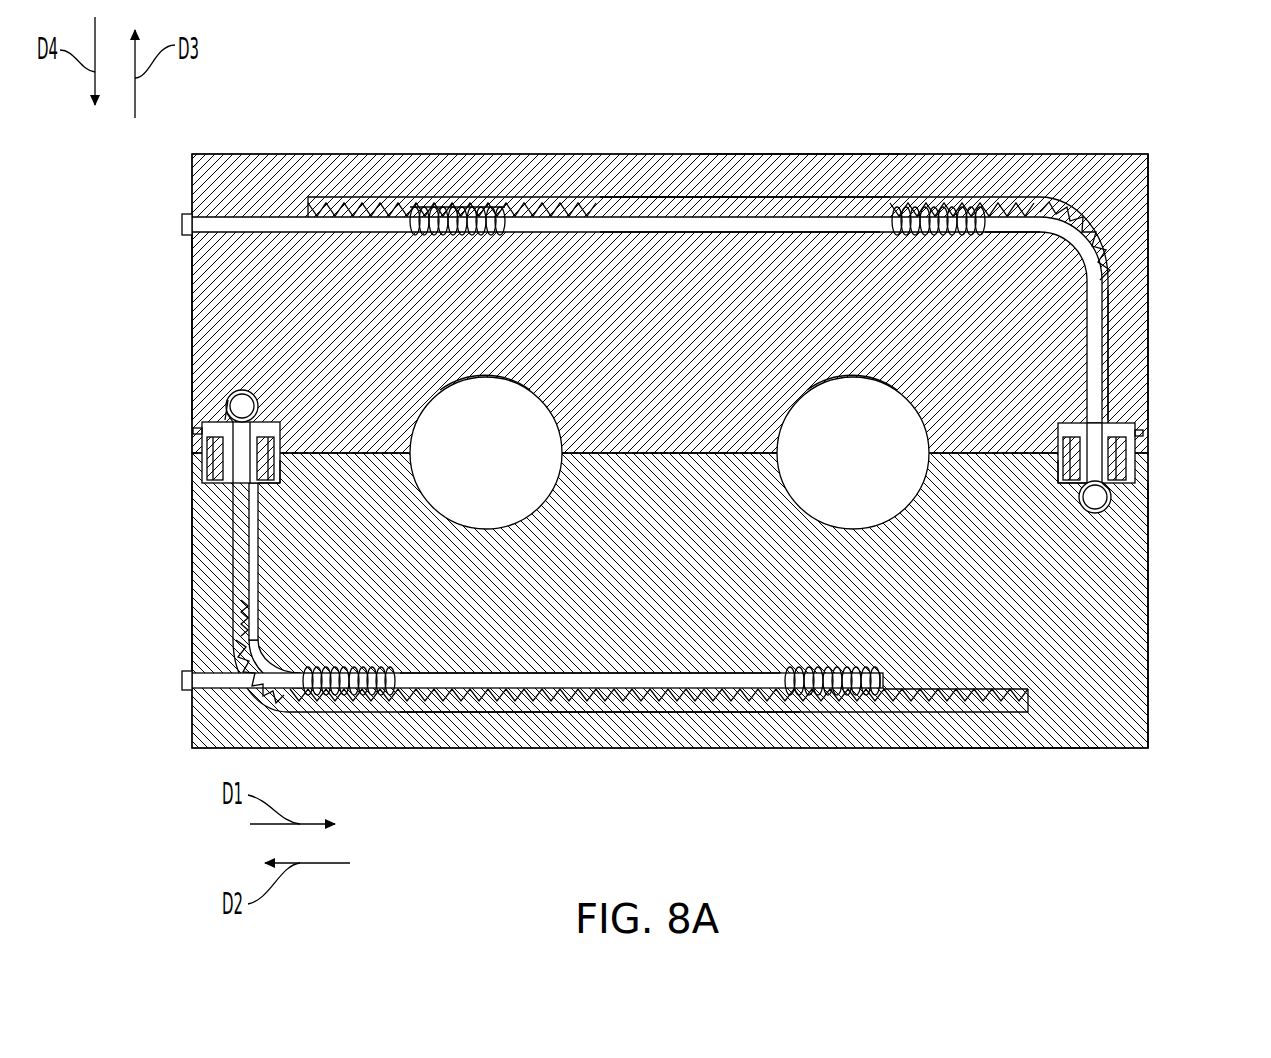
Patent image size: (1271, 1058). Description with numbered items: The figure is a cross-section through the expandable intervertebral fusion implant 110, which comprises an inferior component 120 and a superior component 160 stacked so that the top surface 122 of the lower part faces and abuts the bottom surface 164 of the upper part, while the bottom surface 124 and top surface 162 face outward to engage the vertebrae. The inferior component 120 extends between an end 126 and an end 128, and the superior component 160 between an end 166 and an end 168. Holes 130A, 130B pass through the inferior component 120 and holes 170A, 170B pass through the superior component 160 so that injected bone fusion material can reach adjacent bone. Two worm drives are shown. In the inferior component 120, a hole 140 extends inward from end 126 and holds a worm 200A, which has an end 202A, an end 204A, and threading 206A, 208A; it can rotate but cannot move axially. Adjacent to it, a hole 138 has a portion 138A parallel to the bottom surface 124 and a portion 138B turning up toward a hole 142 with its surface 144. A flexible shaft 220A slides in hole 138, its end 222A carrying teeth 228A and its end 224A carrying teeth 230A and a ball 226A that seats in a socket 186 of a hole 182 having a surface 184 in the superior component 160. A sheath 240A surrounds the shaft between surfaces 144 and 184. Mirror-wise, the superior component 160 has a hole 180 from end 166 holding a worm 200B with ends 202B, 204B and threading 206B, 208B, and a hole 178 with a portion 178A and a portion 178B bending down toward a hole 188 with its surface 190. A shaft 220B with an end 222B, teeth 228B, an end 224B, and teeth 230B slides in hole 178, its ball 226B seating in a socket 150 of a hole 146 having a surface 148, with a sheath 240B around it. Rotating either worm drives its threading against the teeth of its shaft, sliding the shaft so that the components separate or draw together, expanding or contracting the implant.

The expandable intervertebral fusion implant 110 is at (1168, 108).
The inferior component 120 is at (1120, 748).
The top surface 122 is at (660, 460).
The bottom surface 124 is at (980, 748).
The end 126 is at (192, 555).
The end 128 is at (1148, 640).
The hole 130A is at (812, 520).
The hole 130B is at (452, 516).
The hole 138 is at (700, 712).
The portion 138A is at (625, 712).
The portion 138B is at (233, 570).
The hole 140 is at (630, 688).
The hole 142 is at (282, 470).
The surface 144 is at (282, 485).
The hole 146 is at (1058, 475).
The surface 148 is at (1080, 500).
The socket 150 is at (1095, 512).
The superior component 160 is at (700, 153).
The top surface 162 is at (780, 153).
The bottom surface 164 is at (650, 455).
The end 166 is at (192, 300).
The end 168 is at (1150, 215).
The hole 170A is at (854, 368).
The hole 170B is at (488, 368).
The hole 178 is at (590, 198).
The portion 178A is at (660, 197).
The portion 178B is at (1110, 360).
The hole 180 is at (690, 233).
The hole 182 is at (282, 440).
The surface 184 is at (280, 425).
The socket 186 is at (255, 395).
The hole 188 is at (1058, 438).
The surface 190 is at (1062, 425).
The worm 200A is at (215, 682).
The worm 200B is at (590, 233).
The end 202A is at (900, 695).
The end 202B is at (995, 236).
The end 204A is at (183, 686).
The end 204B is at (185, 215).
The threading 206A is at (860, 668).
The threading 206B is at (935, 238).
The threading 208A is at (385, 670).
The threading 208B is at (450, 237).
The shaft 220A is at (500, 712).
The shaft 220B is at (520, 200).
The end 222A is at (1035, 710).
The end 222B is at (312, 198).
The end 224A is at (222, 414).
The end 224B is at (1152, 496).
The ball 226A is at (215, 418).
The ball 226B is at (1112, 505).
The teeth 228A is at (1000, 712).
The teeth 228B is at (412, 207).
The teeth 230A is at (470, 690).
The teeth 230B is at (940, 200).
The sheath 240A is at (198, 431).
The sheath 240B is at (1145, 436).